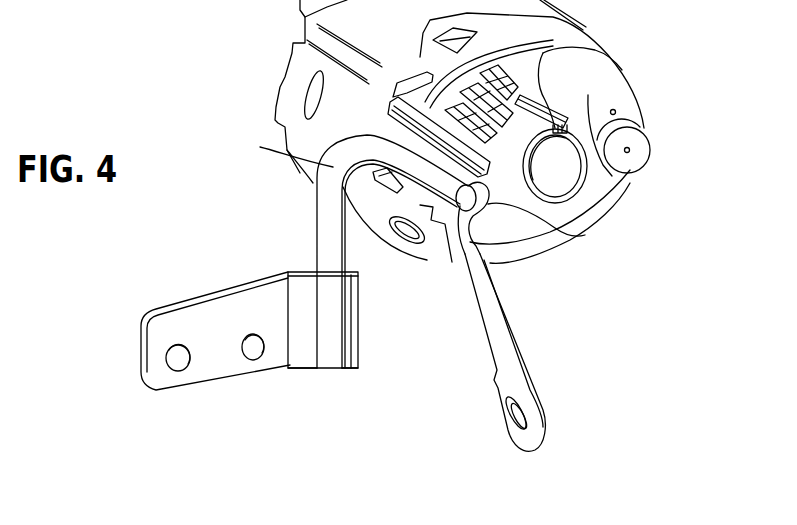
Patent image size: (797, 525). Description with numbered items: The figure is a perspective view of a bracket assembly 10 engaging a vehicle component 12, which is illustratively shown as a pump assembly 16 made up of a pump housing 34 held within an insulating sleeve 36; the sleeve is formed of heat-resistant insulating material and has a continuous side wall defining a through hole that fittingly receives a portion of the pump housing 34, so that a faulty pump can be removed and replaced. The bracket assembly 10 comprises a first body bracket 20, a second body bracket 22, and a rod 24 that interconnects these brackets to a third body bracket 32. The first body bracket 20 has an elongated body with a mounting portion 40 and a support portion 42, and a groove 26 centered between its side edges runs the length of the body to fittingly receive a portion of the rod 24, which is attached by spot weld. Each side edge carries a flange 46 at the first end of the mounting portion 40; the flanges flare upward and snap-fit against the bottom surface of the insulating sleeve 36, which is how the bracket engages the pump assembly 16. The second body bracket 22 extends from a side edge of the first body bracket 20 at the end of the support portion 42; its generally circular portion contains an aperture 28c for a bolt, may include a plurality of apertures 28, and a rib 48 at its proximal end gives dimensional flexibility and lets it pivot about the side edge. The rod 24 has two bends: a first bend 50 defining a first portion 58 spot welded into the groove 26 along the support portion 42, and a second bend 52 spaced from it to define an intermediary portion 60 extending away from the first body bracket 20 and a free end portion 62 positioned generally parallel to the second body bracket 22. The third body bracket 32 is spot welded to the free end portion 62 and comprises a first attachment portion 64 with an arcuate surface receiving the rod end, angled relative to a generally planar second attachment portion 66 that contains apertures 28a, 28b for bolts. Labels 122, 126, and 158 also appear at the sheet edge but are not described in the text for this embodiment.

The bracket assembly 10 is at (131, 291).
The component 12 is at (256, 107).
The pump assembly 16 is at (343, 203).
The first body bracket 20 is at (470, 223).
The second body bracket 22 is at (543, 363).
The rod 24 is at (308, 238).
The groove 26 is at (580, 236).
The apertures 28 is at (517, 413).
The aperture 28a is at (172, 358).
The aperture 28b is at (257, 338).
The aperture 28c is at (518, 416).
The third body bracket 32 is at (237, 396).
The pump housing 34 is at (588, 192).
The insulating sleeve 36 is at (607, 57).
The mounting portion 40 is at (320, 110).
The support portion 42 is at (457, 245).
The flange 46 is at (360, 140).
The rib 48 is at (520, 263).
The first bend 50 is at (437, 142).
The second bend 52 is at (335, 150).
The first portion 58 is at (465, 65).
The intermediary portion 60 is at (370, 140).
The free end portion 62 is at (340, 367).
The first attachment portion 64 is at (307, 363).
The second attachment portion 66 is at (197, 313).
The element 122 is at (34, 0).
The element 126 is at (116, 11).
The element 158 is at (186, 0).